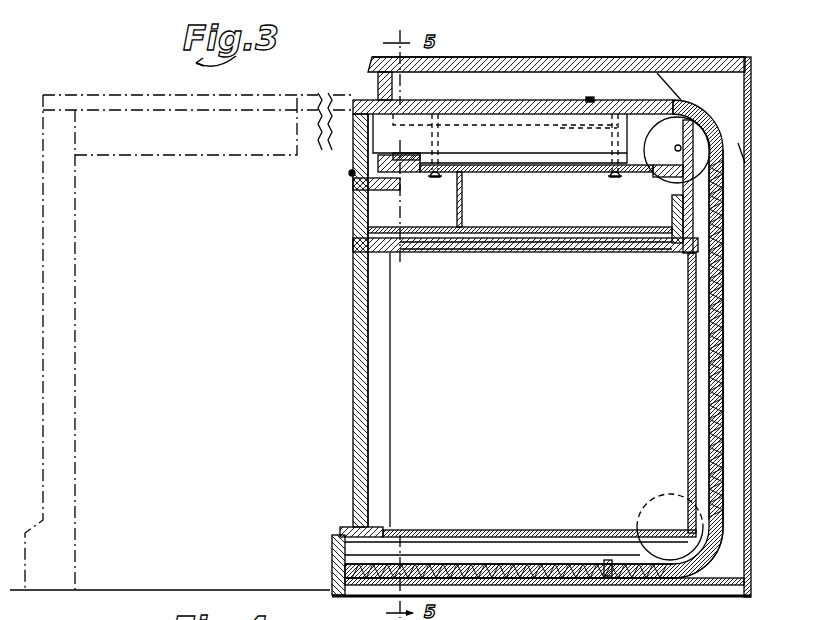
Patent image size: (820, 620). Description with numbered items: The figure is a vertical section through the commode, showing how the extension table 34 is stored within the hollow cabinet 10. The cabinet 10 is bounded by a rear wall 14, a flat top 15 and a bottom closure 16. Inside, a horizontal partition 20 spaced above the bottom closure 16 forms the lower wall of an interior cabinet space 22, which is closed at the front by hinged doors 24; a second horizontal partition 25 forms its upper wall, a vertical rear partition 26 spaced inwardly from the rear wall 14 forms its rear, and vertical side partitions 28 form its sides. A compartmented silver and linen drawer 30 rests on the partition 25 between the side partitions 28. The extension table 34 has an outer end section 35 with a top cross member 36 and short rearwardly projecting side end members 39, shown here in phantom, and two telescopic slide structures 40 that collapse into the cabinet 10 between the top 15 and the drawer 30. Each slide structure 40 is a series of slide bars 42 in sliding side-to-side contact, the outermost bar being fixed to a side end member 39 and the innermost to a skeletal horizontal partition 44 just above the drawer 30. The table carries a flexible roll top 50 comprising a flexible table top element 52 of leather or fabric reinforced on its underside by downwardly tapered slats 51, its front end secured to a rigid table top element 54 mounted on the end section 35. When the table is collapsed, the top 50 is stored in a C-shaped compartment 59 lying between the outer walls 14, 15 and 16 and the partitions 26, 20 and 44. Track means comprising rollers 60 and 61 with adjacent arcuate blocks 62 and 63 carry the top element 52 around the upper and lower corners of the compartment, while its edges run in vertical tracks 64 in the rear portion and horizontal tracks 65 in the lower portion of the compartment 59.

The cabinet 10 is at (540, 56).
The rear wall 14 is at (749, 362).
The flat top 15 is at (557, 327).
The bottom closure 16 is at (563, 592).
The horizontal partition 20 is at (548, 528).
The interior cabinet space 22 is at (403, 437).
The hinged doors 24 is at (354, 340).
The second horizontal partition 25 is at (498, 253).
The vertical rear partition 26 is at (690, 303).
The vertical side partitions 28 is at (405, 376).
The silver and linen drawer 30 is at (355, 212).
The extension table 34 is at (118, 93).
The outer end section 35 is at (42, 120).
The top cross member 36 is at (351, 157).
The side end members 39 is at (160, 156).
The telescopic slide structures 40 is at (560, 126).
The slide bars 42 is at (510, 121).
The skeletal horizontal partition 44 is at (522, 172).
The flexible roll top 50 is at (726, 290).
The slats 51 is at (716, 444).
The flexible table top element 52 is at (726, 410).
The rigid table top element 54 is at (366, 99).
The C-shaped compartment 59 is at (733, 442).
The upper rollers 60 is at (700, 148).
The lower rollers 61 is at (690, 545).
The upper arcuate block 62 is at (731, 107).
The lower arcuate block 63 is at (731, 535).
The vertical tracks 64 is at (711, 329).
The horizontal tracks 65 is at (591, 98).